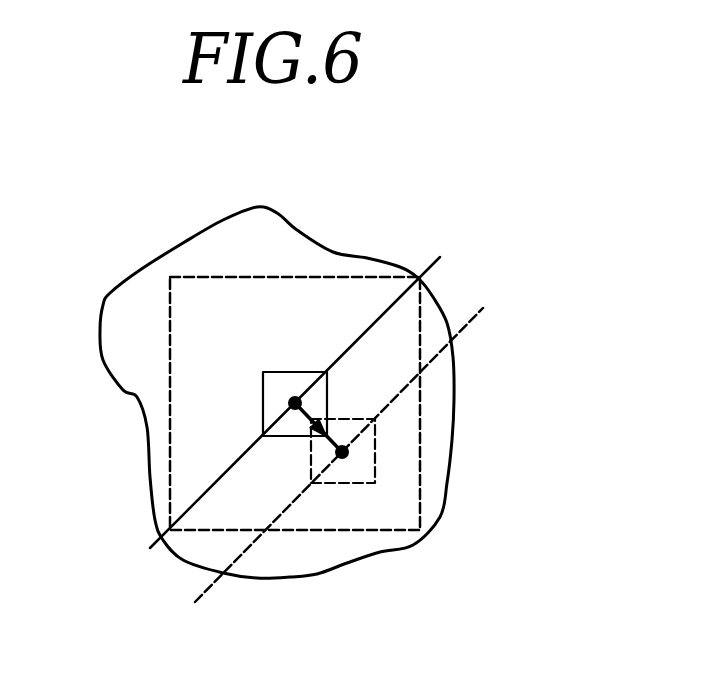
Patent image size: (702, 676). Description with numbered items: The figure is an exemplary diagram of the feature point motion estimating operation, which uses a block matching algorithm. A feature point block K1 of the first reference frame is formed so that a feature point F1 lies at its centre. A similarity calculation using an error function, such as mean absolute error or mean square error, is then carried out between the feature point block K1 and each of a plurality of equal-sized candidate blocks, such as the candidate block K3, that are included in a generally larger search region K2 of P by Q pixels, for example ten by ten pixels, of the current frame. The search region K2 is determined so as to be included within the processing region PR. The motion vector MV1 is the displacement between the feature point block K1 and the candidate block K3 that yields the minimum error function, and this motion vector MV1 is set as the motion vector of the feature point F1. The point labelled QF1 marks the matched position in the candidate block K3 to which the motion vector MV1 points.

The processing region PR is at (183, 240).
The search region K2 is at (323, 277).
The feature point F1 is at (301, 398).
The quasi-feature point QF1 is at (349, 453).
The motion vector MV1 is at (324, 419).
The feature point block K1 is at (290, 437).
The candidate block K3 is at (347, 483).